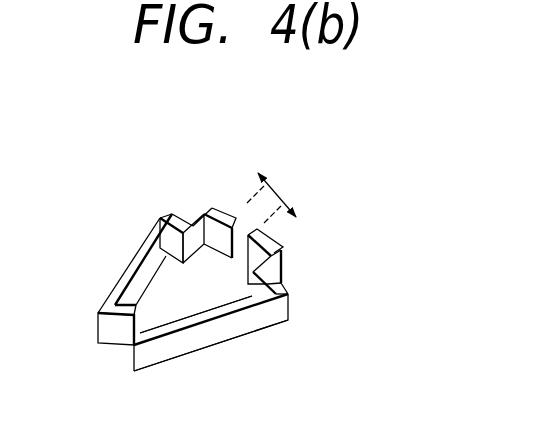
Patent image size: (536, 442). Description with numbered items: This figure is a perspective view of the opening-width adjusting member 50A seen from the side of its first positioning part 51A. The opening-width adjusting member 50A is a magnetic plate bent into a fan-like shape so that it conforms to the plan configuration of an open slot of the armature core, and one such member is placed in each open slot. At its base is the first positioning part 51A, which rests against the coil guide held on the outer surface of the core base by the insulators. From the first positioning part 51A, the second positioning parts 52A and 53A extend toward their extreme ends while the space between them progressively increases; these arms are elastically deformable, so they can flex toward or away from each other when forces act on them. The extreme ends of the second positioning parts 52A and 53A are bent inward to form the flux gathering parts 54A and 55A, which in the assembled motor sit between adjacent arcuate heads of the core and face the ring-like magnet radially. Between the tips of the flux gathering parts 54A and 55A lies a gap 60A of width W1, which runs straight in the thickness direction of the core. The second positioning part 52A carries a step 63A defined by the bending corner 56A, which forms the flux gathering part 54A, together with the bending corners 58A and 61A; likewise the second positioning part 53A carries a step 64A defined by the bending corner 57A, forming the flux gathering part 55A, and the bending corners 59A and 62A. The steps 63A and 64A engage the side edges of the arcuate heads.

The opening-width adjusting member 50A is at (235, 336).
The first positioning part 51A is at (125, 332).
The second positioning part 52A is at (129, 260).
The second positioning part 53A is at (205, 333).
The flux gathering part 54A is at (224, 213).
The flux gathering part 55A is at (270, 250).
The bending corner 56A is at (198, 213).
The bending corner 57A is at (278, 256).
The bending corner 58A is at (160, 217).
The bending corner 59A is at (283, 305).
The gap 60A is at (232, 258).
The bending corner 61A is at (180, 226).
The bending corner 62A is at (281, 268).
The step 63A is at (190, 226).
The step 64A is at (281, 287).
The width of the gap W1 is at (282, 195).